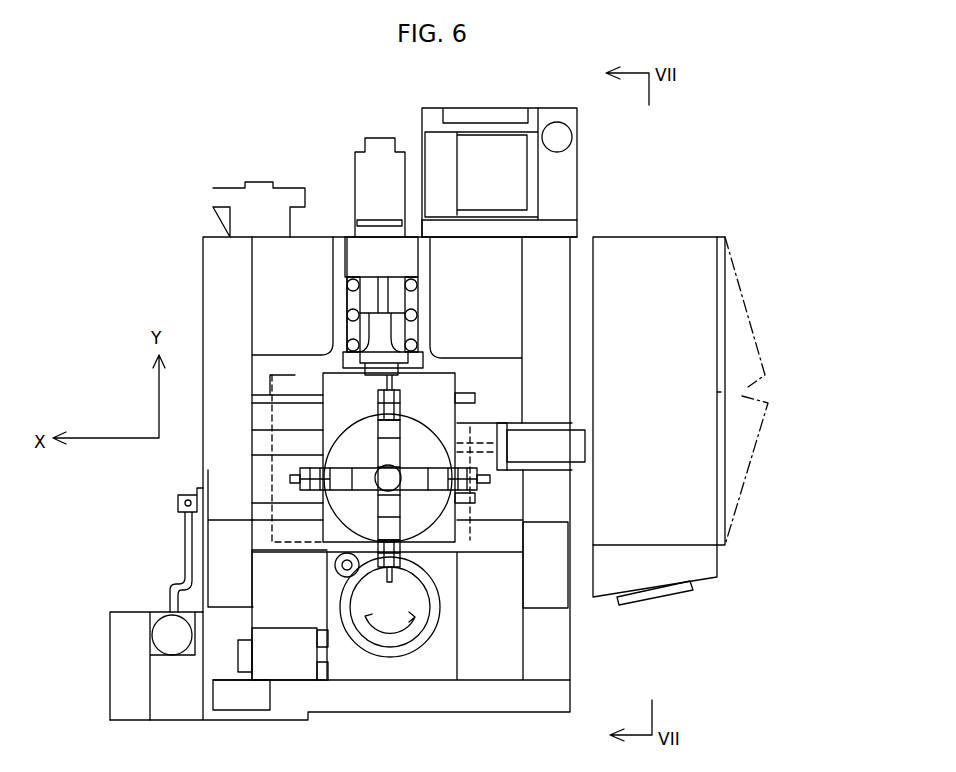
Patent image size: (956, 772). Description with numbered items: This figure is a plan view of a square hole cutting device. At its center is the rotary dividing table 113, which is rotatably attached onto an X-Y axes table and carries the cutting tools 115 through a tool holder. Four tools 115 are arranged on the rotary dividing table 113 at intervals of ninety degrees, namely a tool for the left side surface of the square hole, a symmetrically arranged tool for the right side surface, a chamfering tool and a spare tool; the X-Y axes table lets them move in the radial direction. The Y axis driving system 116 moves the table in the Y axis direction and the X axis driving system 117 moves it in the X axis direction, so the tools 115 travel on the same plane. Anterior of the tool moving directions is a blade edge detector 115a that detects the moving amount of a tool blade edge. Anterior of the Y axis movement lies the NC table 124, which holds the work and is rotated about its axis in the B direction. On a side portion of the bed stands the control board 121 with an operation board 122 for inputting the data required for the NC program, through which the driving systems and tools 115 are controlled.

The rotary dividing table 113 is at (418, 520).
The tools 115 is at (378, 386).
The blade edge detector 115a is at (336, 569).
The Y axis driving system 116 is at (383, 297).
The X axis driving system 117 is at (482, 433).
The control board 121 is at (698, 312).
The operation board 122 is at (662, 598).
The NC table 124 is at (392, 637).